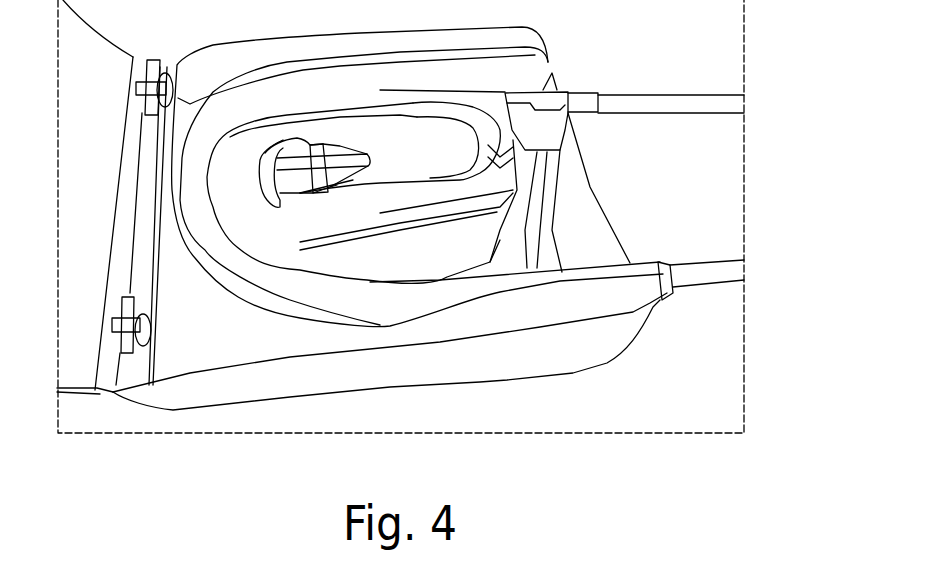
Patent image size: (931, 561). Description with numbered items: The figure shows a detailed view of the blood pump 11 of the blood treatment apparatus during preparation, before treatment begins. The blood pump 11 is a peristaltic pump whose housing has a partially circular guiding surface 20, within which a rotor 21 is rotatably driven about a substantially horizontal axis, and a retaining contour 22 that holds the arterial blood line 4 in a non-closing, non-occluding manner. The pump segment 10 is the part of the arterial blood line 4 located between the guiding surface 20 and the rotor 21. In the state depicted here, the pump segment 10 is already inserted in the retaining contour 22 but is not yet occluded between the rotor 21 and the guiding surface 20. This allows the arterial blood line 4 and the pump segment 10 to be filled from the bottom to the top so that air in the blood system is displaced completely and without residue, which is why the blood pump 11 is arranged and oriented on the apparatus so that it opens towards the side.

The arterial blood line 4 is at (658, 104).
The pump segment 10 is at (285, 285).
The blood pump 11 is at (507, 350).
The partially circular guiding surface 20 is at (223, 292).
The rotor 21 is at (387, 213).
The retaining contour 22 is at (542, 132).